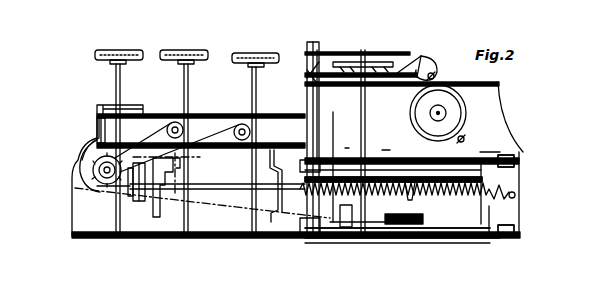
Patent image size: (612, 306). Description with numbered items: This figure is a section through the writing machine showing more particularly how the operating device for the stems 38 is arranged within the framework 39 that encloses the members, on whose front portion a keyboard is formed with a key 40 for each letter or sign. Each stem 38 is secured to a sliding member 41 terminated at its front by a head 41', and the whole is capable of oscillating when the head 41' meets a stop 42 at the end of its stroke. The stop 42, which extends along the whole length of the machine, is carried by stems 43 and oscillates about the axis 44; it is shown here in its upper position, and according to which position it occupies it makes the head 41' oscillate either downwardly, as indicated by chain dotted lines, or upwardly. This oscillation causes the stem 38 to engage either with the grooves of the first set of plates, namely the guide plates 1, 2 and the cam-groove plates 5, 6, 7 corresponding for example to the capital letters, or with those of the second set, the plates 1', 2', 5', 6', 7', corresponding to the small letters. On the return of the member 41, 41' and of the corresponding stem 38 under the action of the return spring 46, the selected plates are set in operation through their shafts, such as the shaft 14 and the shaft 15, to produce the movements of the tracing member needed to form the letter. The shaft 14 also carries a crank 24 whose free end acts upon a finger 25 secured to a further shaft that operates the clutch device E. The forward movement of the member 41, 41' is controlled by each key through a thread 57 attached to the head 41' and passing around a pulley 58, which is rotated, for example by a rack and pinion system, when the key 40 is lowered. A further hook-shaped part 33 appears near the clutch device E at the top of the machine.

The key 40 is at (113, 50).
The finger 25 is at (312, 56).
The crank 24 is at (312, 83).
The clutch device E is at (367, 62).
The hook 33 is at (411, 64).
The shaft 14 is at (320, 102).
The shaft 15 is at (366, 104).
The plate 7' is at (349, 135).
The plate 6' is at (387, 137).
The plate 5' is at (473, 126).
The guide plate 2' is at (490, 141).
The guide plate 1' is at (523, 169).
The axis 44 is at (518, 195).
The stem 38 is at (480, 209).
The return spring 46 is at (409, 190).
The guide plate 2 is at (495, 219).
The framework 39 is at (73, 183).
The pulley 58 is at (103, 185).
The stop 42 is at (117, 205).
The thread 57 is at (157, 193).
The stem 43 is at (217, 189).
The head 41' is at (282, 219).
The sliding member 41 is at (376, 247).
The plate 5 is at (397, 266).
The plate 6 is at (402, 263).
The plate 7 is at (397, 259).
The guide plate 1 is at (503, 258).